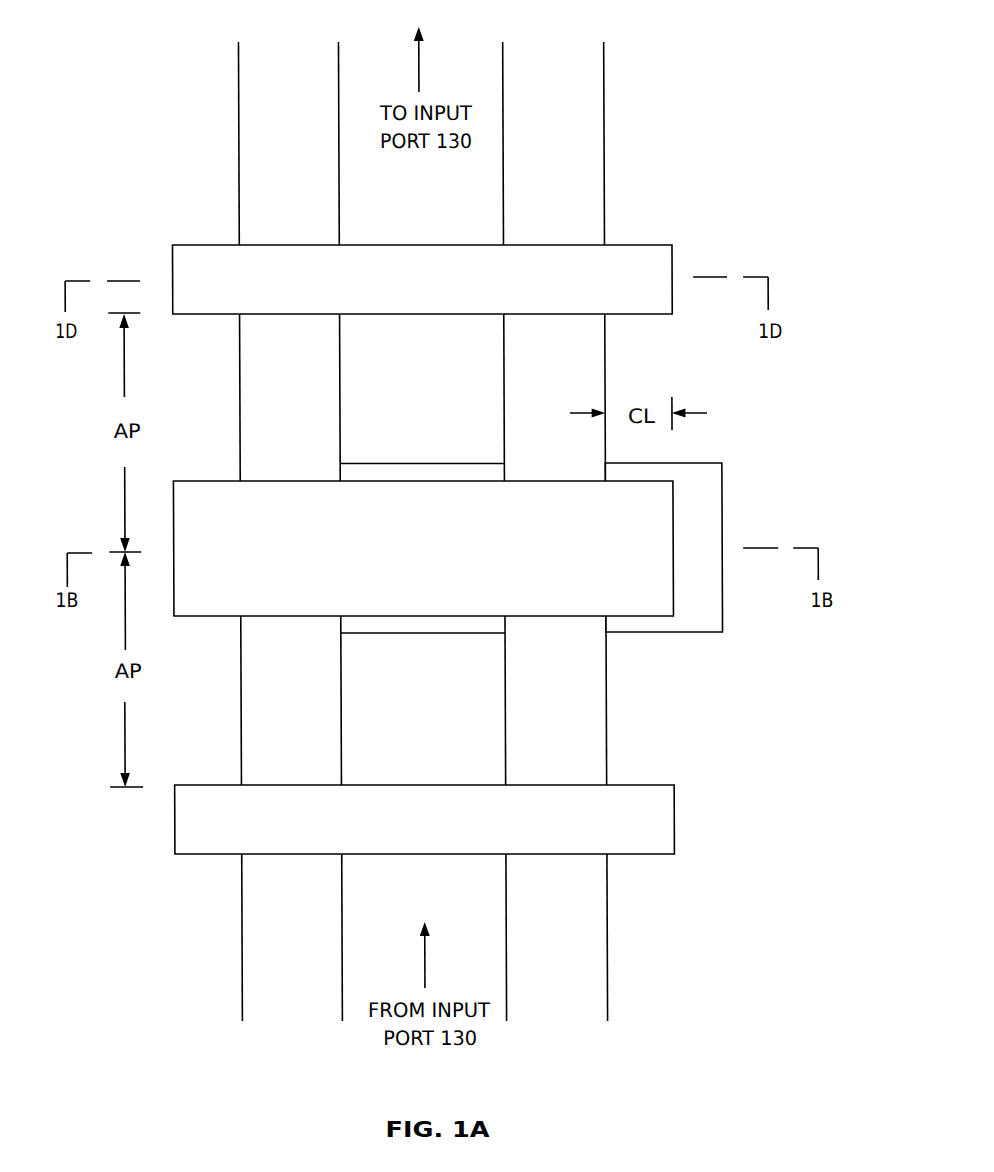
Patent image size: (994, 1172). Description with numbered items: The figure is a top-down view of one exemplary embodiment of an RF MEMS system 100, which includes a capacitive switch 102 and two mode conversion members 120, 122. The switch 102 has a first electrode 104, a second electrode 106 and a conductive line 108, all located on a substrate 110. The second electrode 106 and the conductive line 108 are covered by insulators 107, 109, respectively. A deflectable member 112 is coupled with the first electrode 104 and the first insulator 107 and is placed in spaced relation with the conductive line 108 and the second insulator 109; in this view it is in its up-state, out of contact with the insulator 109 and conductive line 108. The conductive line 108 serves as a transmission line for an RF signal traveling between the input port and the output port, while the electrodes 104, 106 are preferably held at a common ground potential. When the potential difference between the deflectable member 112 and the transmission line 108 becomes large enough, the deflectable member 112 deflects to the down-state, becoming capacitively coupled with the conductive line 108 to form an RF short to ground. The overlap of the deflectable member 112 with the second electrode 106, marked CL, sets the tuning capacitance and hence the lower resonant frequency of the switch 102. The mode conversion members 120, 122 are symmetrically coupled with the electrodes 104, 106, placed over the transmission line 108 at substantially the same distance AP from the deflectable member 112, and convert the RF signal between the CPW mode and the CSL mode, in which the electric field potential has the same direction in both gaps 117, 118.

The RF MEMS system 100 is at (730, 84).
The capacitive switch 102 is at (413, 438).
The first electrode 104 is at (214, 714).
The second electrode 106 is at (670, 712).
The insulator 107 is at (686, 632).
The conductive line 108 is at (442, 752).
The insulator 109 is at (380, 633).
The substrate 110 is at (311, 201).
The deflectable member 112 is at (441, 556).
The gap 117 is at (238, 912).
The gap 118 is at (604, 907).
The mode conversion member 120 is at (442, 834).
The mode conversion member 122 is at (442, 292).